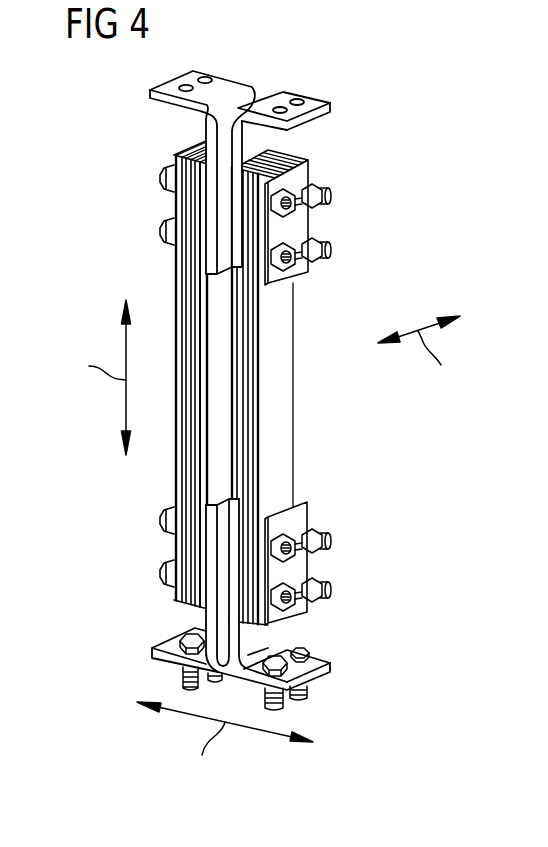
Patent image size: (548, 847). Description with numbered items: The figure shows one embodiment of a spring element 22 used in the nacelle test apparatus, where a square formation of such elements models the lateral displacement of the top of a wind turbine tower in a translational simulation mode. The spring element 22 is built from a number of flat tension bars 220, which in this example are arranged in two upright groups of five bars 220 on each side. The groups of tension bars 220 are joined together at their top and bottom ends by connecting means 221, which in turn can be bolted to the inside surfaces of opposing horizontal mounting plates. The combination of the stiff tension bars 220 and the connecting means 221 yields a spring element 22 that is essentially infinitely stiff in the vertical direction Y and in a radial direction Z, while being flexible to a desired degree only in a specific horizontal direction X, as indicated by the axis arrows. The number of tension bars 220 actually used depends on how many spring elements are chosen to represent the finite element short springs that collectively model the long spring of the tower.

The spring element 22 is at (396, 209).
The flat tension bar 220 is at (283, 383).
The connecting means 221 is at (284, 98).